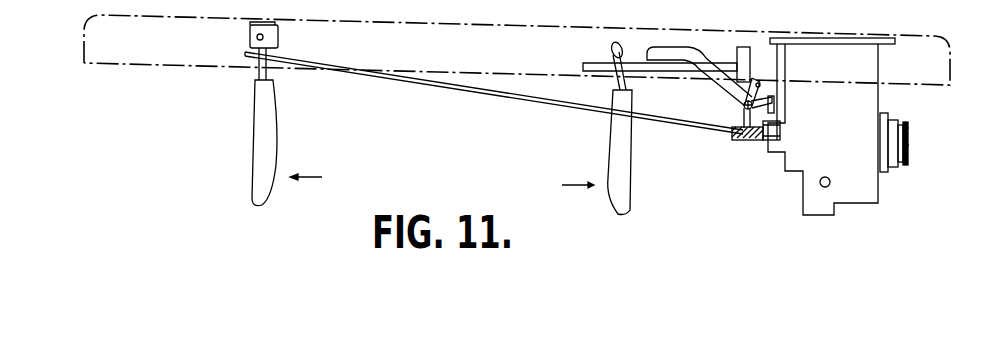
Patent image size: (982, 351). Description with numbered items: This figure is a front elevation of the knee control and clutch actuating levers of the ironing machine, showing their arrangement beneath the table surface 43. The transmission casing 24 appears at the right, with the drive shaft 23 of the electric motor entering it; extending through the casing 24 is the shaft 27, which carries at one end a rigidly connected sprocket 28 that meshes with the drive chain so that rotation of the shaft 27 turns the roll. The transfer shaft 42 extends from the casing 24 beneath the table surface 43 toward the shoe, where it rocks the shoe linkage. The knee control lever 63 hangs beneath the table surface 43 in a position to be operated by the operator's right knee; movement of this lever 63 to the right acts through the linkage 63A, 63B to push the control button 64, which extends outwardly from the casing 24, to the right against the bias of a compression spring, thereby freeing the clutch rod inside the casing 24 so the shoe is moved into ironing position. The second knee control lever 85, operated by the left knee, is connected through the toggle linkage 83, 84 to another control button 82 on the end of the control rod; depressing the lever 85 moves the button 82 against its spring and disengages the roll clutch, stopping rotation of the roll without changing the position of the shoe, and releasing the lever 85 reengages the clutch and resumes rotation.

The table surface 43 is at (470, 22).
The transfer shaft 42 is at (702, 53).
The casing 24 is at (811, 47).
The drive shaft 23 is at (829, 178).
The shaft 27 is at (908, 146).
The sprocket 28 is at (915, 122).
The control button 82 is at (772, 127).
The toggle linkage 83 is at (757, 139).
The toggle linkage 84 is at (515, 97).
The knee control lever 85 is at (275, 140).
The knee control lever 63 is at (612, 168).
The linkage 63A is at (744, 105).
The linkage 63B is at (774, 96).
The control button 64 is at (774, 106).